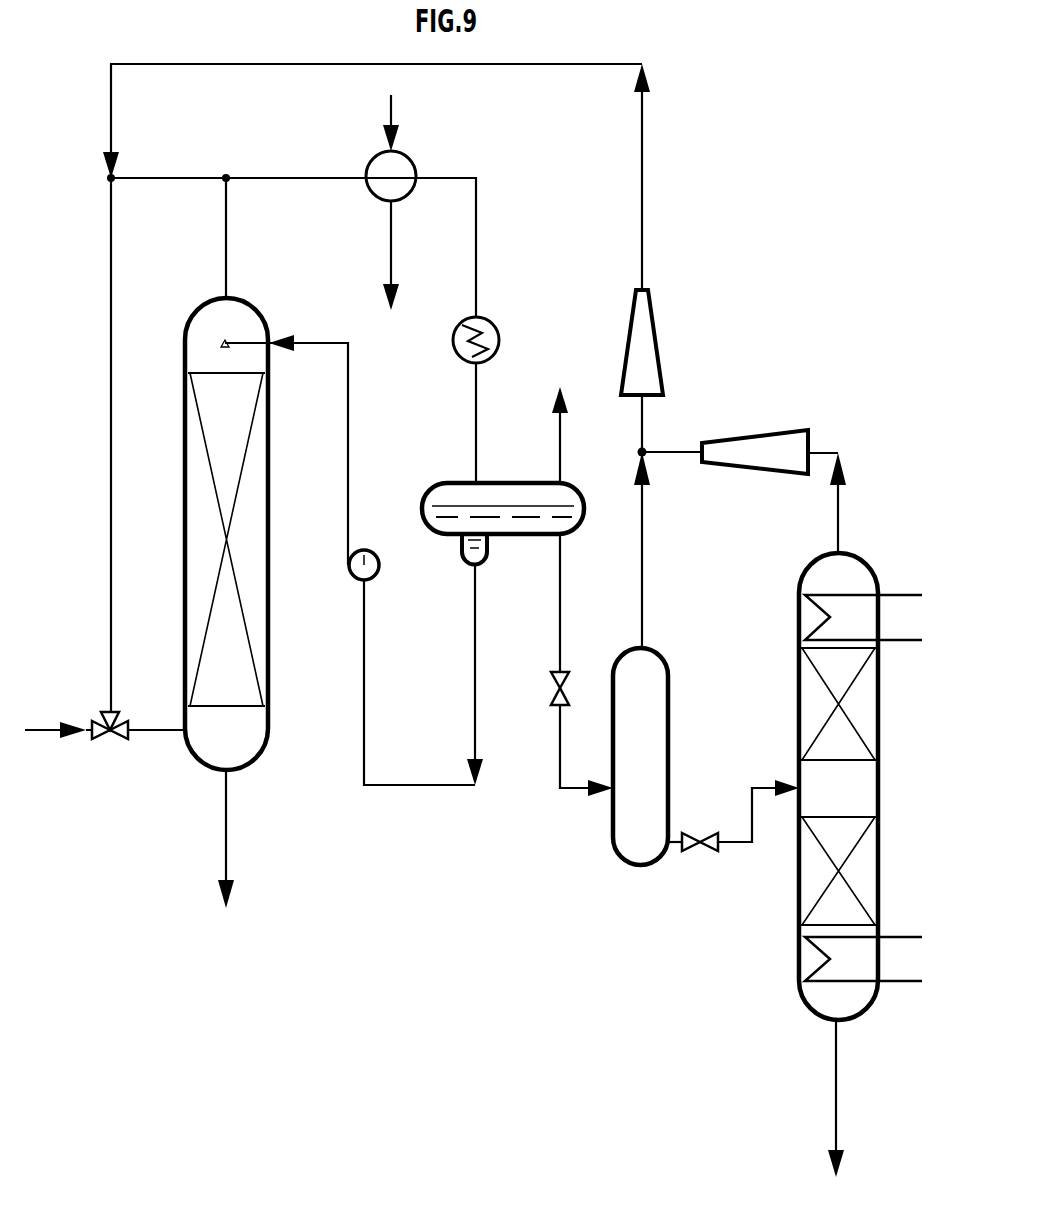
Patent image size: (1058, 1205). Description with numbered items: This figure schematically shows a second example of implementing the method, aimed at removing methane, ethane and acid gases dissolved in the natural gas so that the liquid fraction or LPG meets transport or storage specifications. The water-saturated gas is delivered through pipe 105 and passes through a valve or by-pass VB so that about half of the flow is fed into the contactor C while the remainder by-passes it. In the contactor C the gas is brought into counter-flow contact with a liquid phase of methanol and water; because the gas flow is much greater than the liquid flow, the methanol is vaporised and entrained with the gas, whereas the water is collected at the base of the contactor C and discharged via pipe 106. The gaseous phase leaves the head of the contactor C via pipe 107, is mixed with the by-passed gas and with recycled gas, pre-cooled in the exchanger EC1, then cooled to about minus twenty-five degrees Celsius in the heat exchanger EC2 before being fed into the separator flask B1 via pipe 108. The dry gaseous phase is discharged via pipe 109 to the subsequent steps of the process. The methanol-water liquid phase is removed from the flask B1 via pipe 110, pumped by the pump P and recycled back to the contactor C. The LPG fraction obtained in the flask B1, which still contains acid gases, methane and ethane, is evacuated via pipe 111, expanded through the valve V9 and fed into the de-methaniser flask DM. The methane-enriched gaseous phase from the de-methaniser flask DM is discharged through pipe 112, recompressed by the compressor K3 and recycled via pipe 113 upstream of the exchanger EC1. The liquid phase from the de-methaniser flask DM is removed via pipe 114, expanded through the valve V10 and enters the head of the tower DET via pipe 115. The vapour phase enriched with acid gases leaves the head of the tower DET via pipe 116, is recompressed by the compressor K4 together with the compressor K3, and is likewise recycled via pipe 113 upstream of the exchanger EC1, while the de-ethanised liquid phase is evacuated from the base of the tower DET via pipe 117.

The pipe 105 is at (50, 738).
The pipe 106 is at (226, 826).
The pipe 107 is at (226, 242).
The pipe 108 is at (476, 398).
The pipe 109 is at (560, 428).
The pipe 110 is at (474, 666).
The pipe 111 is at (557, 665).
The pipe 112 is at (645, 568).
The pipe 113 is at (647, 128).
The pipe 114 is at (674, 848).
The pipe 115 is at (741, 848).
The pipe 116 is at (838, 515).
The pipe 117 is at (836, 1061).
The contactor C is at (271, 506).
The pump P is at (303, 457).
The exchanger EC1 is at (404, 202).
The heat exchanger EC2 is at (496, 332).
The separator flask B1 is at (503, 506).
The valve V9 is at (548, 688).
The valve V10 is at (703, 830).
The valve or by-pass VB is at (112, 741).
The compressor K3 is at (656, 342).
The compressor K4 is at (725, 441).
The de-methaniser flask DM is at (660, 652).
The tower DET is at (799, 655).